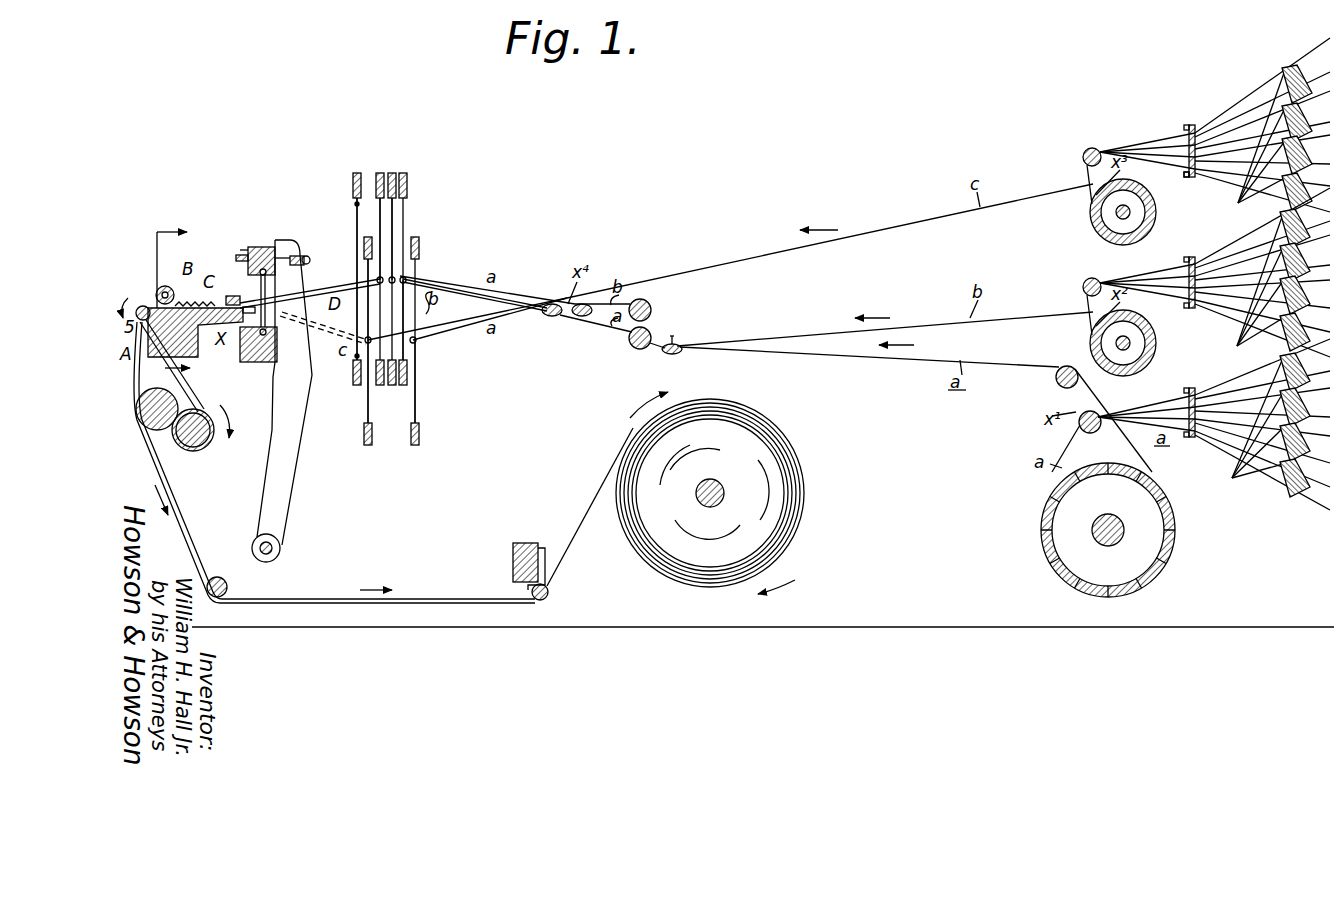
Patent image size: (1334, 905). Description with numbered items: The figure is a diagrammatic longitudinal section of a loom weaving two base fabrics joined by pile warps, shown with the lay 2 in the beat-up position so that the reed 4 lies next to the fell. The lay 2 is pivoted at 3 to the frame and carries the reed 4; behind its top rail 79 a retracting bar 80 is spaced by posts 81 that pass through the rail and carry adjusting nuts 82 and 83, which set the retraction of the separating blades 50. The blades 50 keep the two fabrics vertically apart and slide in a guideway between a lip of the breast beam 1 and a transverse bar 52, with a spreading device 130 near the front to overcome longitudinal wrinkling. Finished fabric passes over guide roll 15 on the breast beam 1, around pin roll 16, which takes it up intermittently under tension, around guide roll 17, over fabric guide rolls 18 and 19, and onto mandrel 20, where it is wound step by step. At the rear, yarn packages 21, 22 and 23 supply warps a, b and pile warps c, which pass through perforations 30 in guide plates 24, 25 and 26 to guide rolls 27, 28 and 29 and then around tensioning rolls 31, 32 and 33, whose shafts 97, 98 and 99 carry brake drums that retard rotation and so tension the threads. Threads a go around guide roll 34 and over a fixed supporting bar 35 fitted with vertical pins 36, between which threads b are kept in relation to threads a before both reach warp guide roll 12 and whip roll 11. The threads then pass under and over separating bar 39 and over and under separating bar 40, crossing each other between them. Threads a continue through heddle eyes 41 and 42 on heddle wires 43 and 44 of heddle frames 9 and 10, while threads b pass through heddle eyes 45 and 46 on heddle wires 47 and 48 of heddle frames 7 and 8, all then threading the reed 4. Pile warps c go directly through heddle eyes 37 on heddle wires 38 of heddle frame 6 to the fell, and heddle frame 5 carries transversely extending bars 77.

The breast beam 1 is at (195, 343).
The lay 2 is at (290, 392).
The pivot 3 is at (282, 548).
The reed 4 is at (310, 293).
The heddle frame 5 is at (348, 306).
The heddle frame 6 is at (373, 354).
The heddle frame 7 is at (379, 293).
The heddle frame 8 is at (390, 301).
The heddle frame 9 is at (404, 293).
The heddle frame 10 is at (434, 349).
The whip roll 11 is at (657, 303).
The warp guide roll 12 is at (631, 350).
The guide roll 15 is at (166, 299).
The pin roll 16 is at (209, 436).
The guide roll 17 is at (161, 431).
The fabric guide roll 18 is at (219, 574).
The fabric guide roll 19 is at (546, 581).
The mandrel 20 is at (710, 493).
The yarn packages 21 is at (1214, 424).
The yarn packages 22 is at (1215, 274).
The yarn packages 23 is at (1215, 128).
The guide plate 24 is at (1191, 397).
The guide plate 25 is at (1191, 268).
The guide plate 26 is at (1189, 135).
The guide roll 27 is at (1097, 437).
The guide roll 28 is at (1076, 289).
The guide roll 29 is at (1077, 159).
The perforations 30 is at (1168, 283).
The tensioning roll 31 is at (1082, 530).
The tensioning roll 32 is at (1103, 343).
The tensioning roll 33 is at (1106, 212).
The guide roll 34 is at (1050, 387).
The supporting bar 35 is at (689, 360).
The pins 36 is at (690, 330).
The heddle eyes 37 is at (346, 357).
The heddle wires 38 is at (350, 347).
The separating bar 39 is at (582, 322).
The separating bar 40 is at (551, 322).
The heddle eye 41 is at (430, 342).
The heddle eye 42 is at (428, 272).
The heddle wire 43 is at (436, 381).
The heddle wire 44 is at (427, 328).
The heddle eye 45 is at (408, 246).
The heddle eye 46 is at (422, 263).
The heddle wire 47 is at (376, 213).
The heddle wire 48 is at (424, 229).
The separating blades 50 is at (236, 287).
The bar 52 is at (240, 289).
The bars 77 is at (339, 285).
The top rail 79 is at (264, 240).
The retracting bar 80 is at (311, 250).
The posts 81 is at (229, 245).
The adjusting nut 82 is at (241, 231).
The adjusting nut 83 is at (292, 235).
The shaft 97 is at (1119, 543).
The shaft 98 is at (1154, 345).
The shaft 99 is at (1153, 214).
The spreading device 130 is at (175, 269).